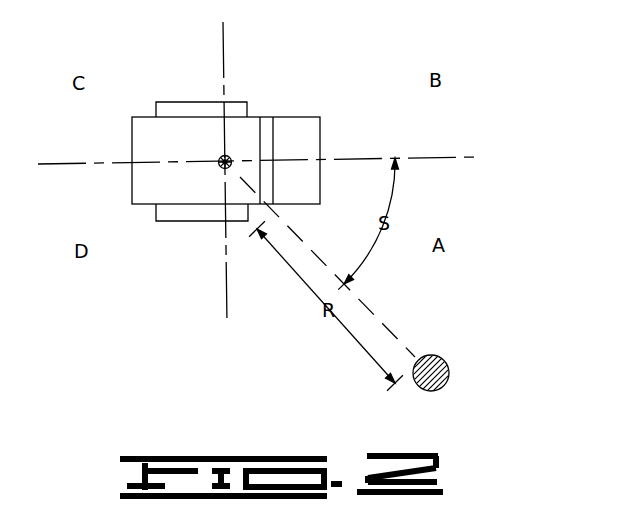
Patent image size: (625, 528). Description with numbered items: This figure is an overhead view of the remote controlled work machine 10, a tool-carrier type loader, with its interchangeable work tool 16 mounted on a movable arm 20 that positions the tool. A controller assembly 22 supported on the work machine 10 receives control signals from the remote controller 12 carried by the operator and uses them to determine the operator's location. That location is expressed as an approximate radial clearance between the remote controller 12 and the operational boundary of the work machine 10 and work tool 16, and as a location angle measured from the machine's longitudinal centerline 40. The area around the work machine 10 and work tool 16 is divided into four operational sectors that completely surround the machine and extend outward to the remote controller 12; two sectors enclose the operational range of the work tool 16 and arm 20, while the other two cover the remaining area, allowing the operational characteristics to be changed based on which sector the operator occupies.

The work machine 10 is at (132, 118).
The remote controller 12 is at (440, 357).
The work tool 16 is at (320, 133).
The movable arm 20 is at (266, 116).
The controller assembly 22 is at (222, 168).
The longitudinal centerline 40 is at (447, 157).